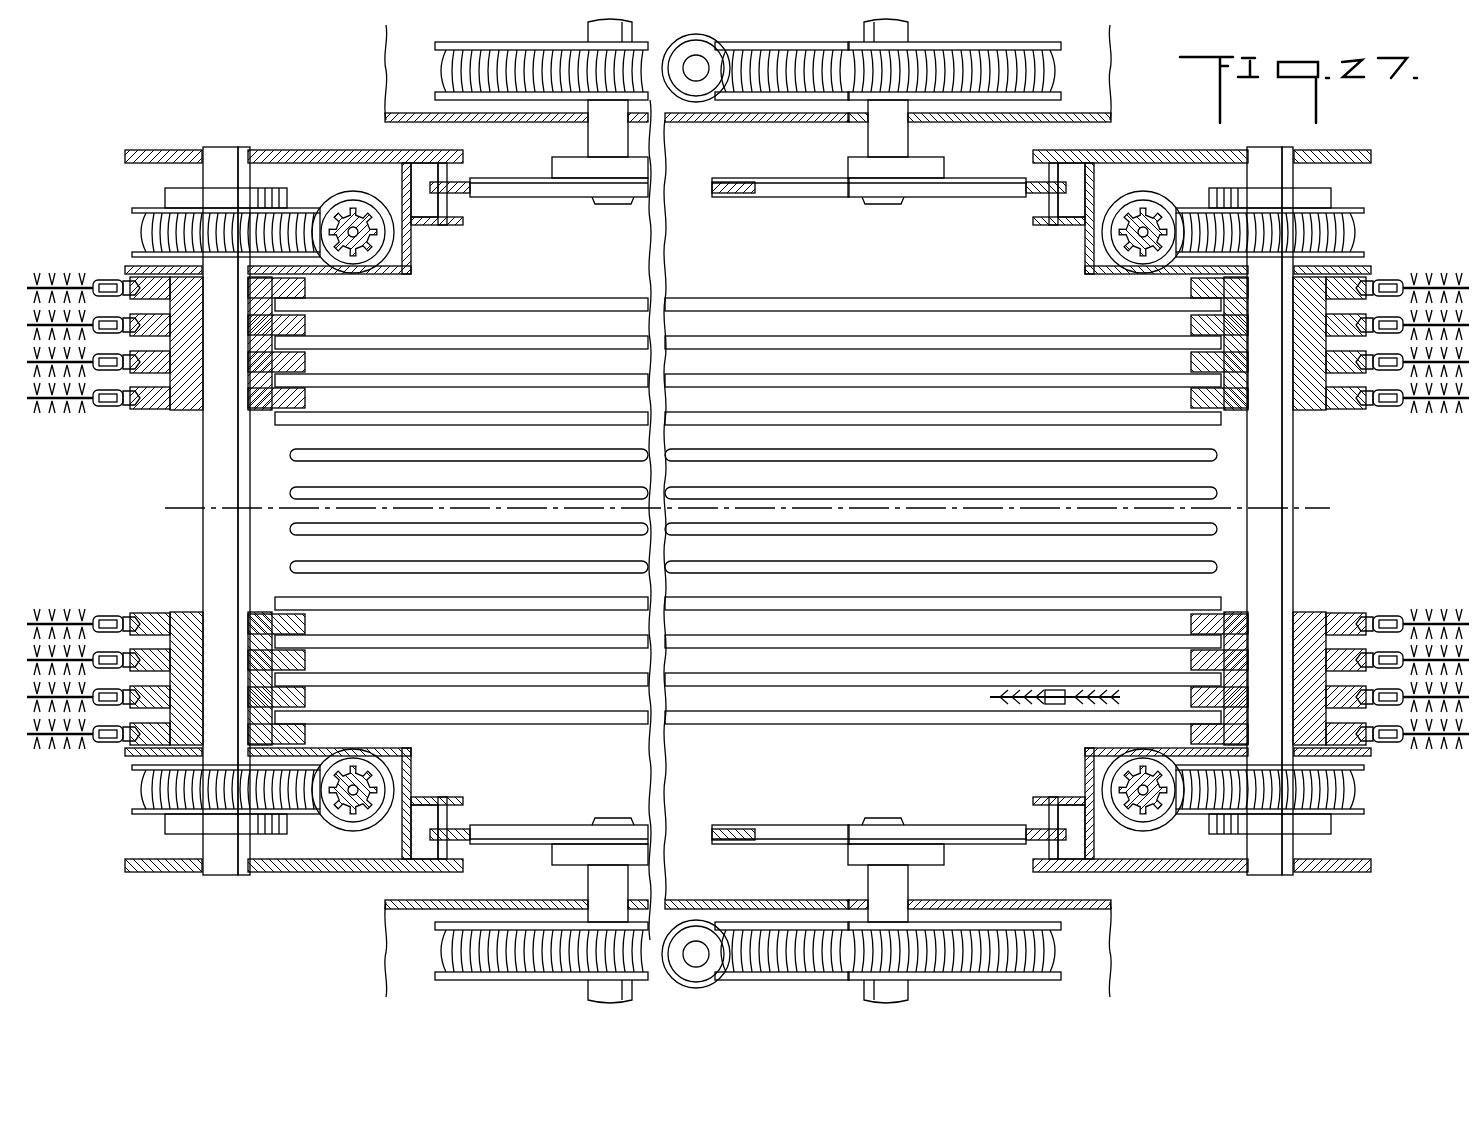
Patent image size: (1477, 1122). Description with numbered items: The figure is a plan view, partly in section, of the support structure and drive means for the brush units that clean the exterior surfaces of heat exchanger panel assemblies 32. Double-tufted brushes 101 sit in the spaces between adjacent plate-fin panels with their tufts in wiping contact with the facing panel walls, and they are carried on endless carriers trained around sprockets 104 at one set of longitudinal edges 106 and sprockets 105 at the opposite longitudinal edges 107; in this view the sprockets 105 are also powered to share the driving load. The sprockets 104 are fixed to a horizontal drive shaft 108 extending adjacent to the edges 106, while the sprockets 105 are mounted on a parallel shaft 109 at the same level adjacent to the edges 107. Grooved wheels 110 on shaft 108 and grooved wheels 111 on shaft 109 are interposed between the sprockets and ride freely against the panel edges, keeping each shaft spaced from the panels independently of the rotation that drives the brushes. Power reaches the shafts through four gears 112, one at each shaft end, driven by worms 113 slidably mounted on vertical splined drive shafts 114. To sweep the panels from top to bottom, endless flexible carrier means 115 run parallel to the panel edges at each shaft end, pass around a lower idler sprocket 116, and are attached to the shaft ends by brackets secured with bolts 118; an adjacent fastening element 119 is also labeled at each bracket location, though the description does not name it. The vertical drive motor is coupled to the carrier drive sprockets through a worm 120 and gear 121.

The panel assembly 32 is at (905, 712).
The double-tufted brushes 101 is at (1436, 358).
The driving wheels or sprockets 104 is at (1335, 405).
The idler wheels or sprockets 105 is at (160, 405).
The longitudinal edges 106 is at (1220, 488).
The opposite longitudinal edges 107 is at (288, 455).
The drive shaft 108 is at (1295, 470).
The shaft 109 is at (203, 470).
The grooved wheels 110 is at (1310, 432).
The grooved wheels 111 is at (190, 600).
The gears 112 is at (136, 232).
The worms 113 is at (350, 196).
The vertical splined drive shafts 114 is at (372, 246).
The endless flexible carrier means 115 is at (456, 182).
The lower idler sprocket 116 is at (555, 197).
The bolts 118 is at (307, 150).
The pin 119 is at (448, 210).
The worm 120 is at (695, 103).
The gear 121 is at (437, 64).